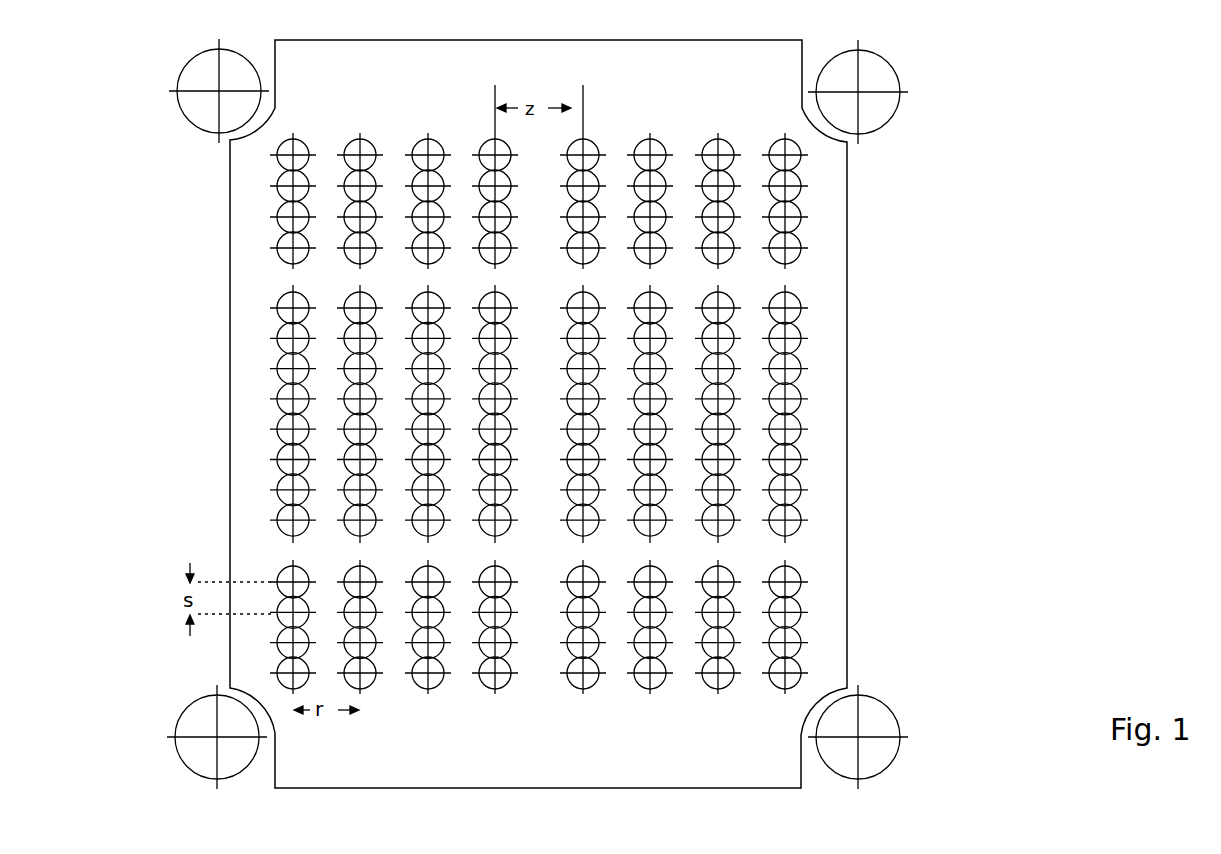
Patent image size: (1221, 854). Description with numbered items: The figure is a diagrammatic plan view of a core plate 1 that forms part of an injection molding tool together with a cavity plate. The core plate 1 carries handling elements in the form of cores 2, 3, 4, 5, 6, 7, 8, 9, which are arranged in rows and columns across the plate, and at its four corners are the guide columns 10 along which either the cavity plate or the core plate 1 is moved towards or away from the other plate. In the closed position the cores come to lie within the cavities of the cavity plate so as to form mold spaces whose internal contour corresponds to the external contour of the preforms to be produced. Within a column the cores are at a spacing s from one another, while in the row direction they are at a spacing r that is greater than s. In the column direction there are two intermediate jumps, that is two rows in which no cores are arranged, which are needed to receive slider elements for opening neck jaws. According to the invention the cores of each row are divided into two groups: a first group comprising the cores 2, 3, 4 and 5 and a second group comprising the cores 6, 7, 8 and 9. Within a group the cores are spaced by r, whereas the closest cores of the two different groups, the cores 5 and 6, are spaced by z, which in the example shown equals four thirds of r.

The core plate 1 is at (970, 374).
The core 2 is at (299, 141).
The core 3 is at (366, 141).
The core 4 is at (434, 141).
The core 5 is at (486, 142).
The core 6 is at (589, 141).
The core 7 is at (657, 141).
The core 8 is at (724, 141).
The core 9 is at (779, 141).
The guide column 10 is at (901, 704).